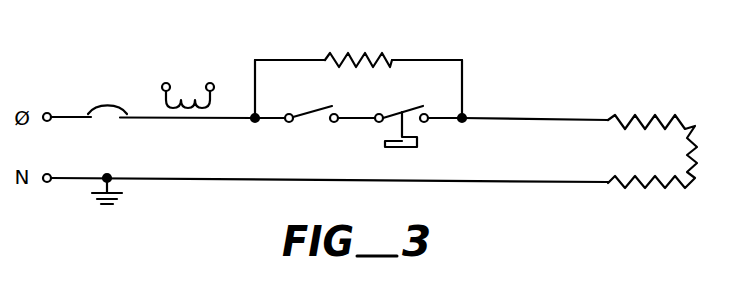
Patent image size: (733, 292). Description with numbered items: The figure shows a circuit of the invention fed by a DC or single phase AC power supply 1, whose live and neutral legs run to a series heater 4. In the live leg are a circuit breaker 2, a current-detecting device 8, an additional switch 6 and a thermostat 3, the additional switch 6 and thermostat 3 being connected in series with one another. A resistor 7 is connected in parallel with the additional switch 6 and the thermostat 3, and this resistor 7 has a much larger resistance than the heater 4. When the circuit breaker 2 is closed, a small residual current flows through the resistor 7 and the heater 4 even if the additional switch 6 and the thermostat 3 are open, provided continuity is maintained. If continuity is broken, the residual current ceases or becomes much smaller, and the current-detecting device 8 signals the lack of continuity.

The power supply 1 is at (42, 157).
The circuit breaker 2 is at (107, 106).
The thermostat 3 is at (404, 105).
The heater 4 is at (628, 128).
The additional switch 6 is at (316, 105).
The resistor 7 is at (365, 50).
The current-detecting device 8 is at (188, 110).